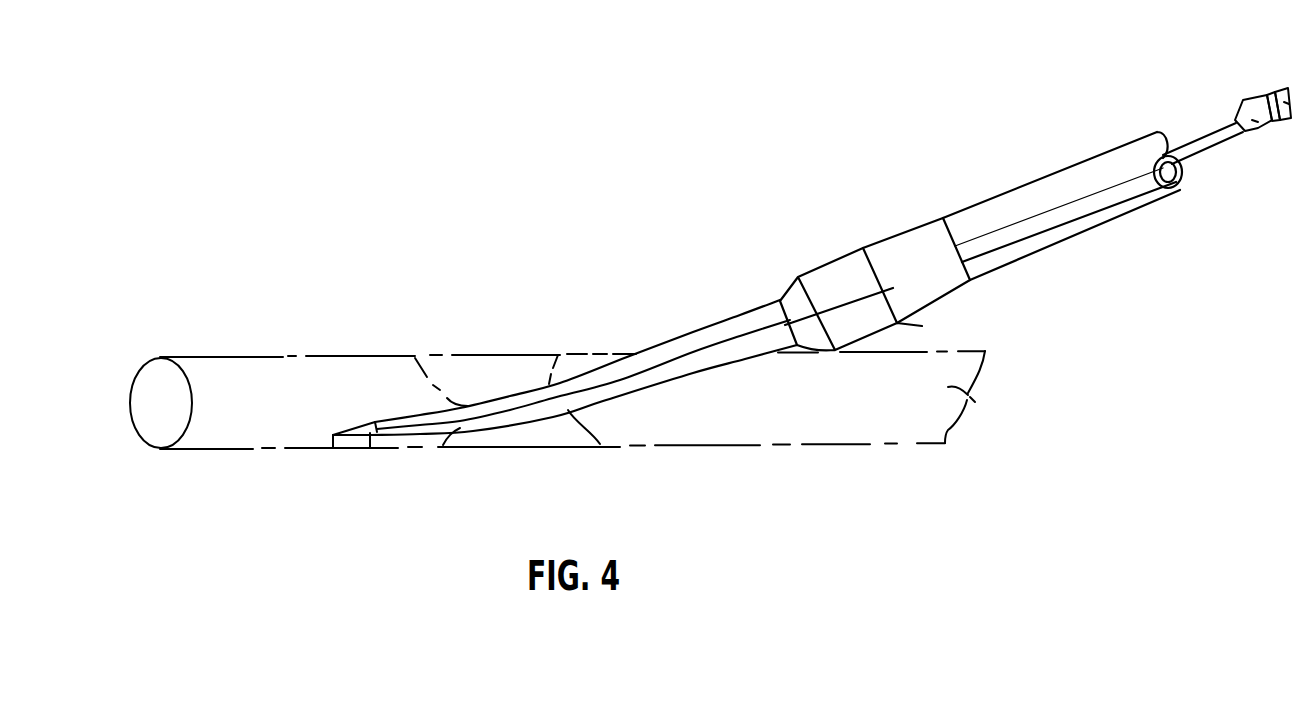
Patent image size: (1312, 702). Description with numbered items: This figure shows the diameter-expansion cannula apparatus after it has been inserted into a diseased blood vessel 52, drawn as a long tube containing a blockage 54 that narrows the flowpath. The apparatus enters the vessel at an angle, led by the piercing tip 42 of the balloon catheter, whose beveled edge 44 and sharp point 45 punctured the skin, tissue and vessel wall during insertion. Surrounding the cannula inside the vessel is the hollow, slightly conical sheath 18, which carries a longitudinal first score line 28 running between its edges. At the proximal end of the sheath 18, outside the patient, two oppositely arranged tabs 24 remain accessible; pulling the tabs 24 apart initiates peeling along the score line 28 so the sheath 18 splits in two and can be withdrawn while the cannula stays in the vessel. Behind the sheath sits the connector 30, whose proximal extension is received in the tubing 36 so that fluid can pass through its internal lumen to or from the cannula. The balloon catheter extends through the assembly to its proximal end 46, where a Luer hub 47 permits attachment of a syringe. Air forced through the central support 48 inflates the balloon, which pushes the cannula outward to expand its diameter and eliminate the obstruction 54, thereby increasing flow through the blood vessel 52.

The sheath 18 is at (582, 382).
The tab 24 is at (866, 233).
The first score line 28 is at (625, 382).
The connector 30 is at (928, 220).
The tubing 36 is at (1100, 217).
The piercing tip 42 is at (368, 447).
The beveled edge 44 is at (360, 426).
The sharp point 45 is at (334, 448).
The proximal end 46 is at (1250, 133).
The Luer hub 47 is at (1249, 98).
The central support 48 is at (1213, 145).
The blood vessel 52 is at (272, 383).
The blockage 54 is at (497, 354).